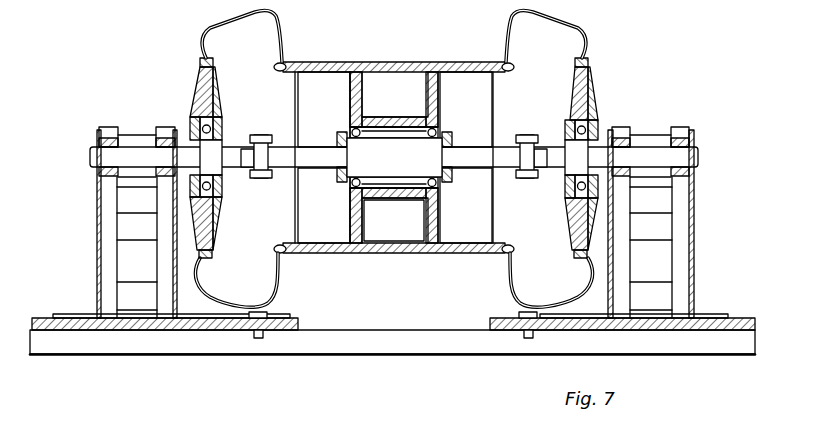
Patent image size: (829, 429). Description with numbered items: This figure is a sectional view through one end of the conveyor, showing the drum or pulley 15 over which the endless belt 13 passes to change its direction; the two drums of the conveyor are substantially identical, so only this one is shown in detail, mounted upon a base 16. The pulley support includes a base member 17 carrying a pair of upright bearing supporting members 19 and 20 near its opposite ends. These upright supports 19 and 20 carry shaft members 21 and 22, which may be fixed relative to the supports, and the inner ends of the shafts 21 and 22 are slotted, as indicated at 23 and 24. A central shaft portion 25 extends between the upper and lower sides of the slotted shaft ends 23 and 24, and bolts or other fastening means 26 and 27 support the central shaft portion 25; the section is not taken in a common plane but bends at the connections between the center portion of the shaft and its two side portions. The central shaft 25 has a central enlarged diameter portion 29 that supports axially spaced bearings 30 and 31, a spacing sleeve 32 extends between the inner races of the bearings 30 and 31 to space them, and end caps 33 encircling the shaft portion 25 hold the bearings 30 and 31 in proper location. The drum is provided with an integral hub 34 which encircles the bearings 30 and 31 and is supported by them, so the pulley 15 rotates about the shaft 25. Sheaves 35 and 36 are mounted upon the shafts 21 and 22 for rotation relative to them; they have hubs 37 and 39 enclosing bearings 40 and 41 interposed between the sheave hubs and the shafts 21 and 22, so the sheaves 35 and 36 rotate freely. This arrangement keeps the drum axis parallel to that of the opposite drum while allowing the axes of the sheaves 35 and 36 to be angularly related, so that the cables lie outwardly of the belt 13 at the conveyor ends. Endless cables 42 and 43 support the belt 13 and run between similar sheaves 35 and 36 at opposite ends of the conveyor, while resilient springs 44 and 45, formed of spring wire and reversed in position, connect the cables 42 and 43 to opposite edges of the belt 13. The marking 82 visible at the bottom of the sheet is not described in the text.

The endless belt 13 is at (398, 62).
The pulley 15 is at (310, 253).
The base 16 is at (205, 347).
The base member 17 is at (372, 345).
The upright bearing supporting member 19 is at (97, 227).
The upright bearing supporting member 20 is at (695, 240).
The shaft member 21 is at (138, 152).
The shaft member 22 is at (654, 158).
The slot 23 is at (266, 135).
The slot 24 is at (518, 140).
The central shaft portion 25 is at (316, 160).
The bolt 26 is at (251, 180).
The bolt 27 is at (527, 180).
The central enlarged diameter portion 29 is at (396, 167).
The bearing 30 is at (348, 130).
The bearing 31 is at (438, 132).
The spacing sleeve 32 is at (392, 135).
The end cap 33 is at (331, 186).
The hub 34 is at (376, 253).
The sheave 35 is at (203, 78).
The sheave 36 is at (588, 75).
The sheave hub 37 is at (193, 123).
The sheave hub 39 is at (598, 122).
The bearing 40 is at (217, 220).
The bearing 41 is at (567, 205).
The endless cable 42 is at (200, 57).
The endless cable 43 is at (587, 58).
The resilient spring 44 is at (285, 26).
The resilient spring 45 is at (508, 22).
The element 82 is at (440, 416).